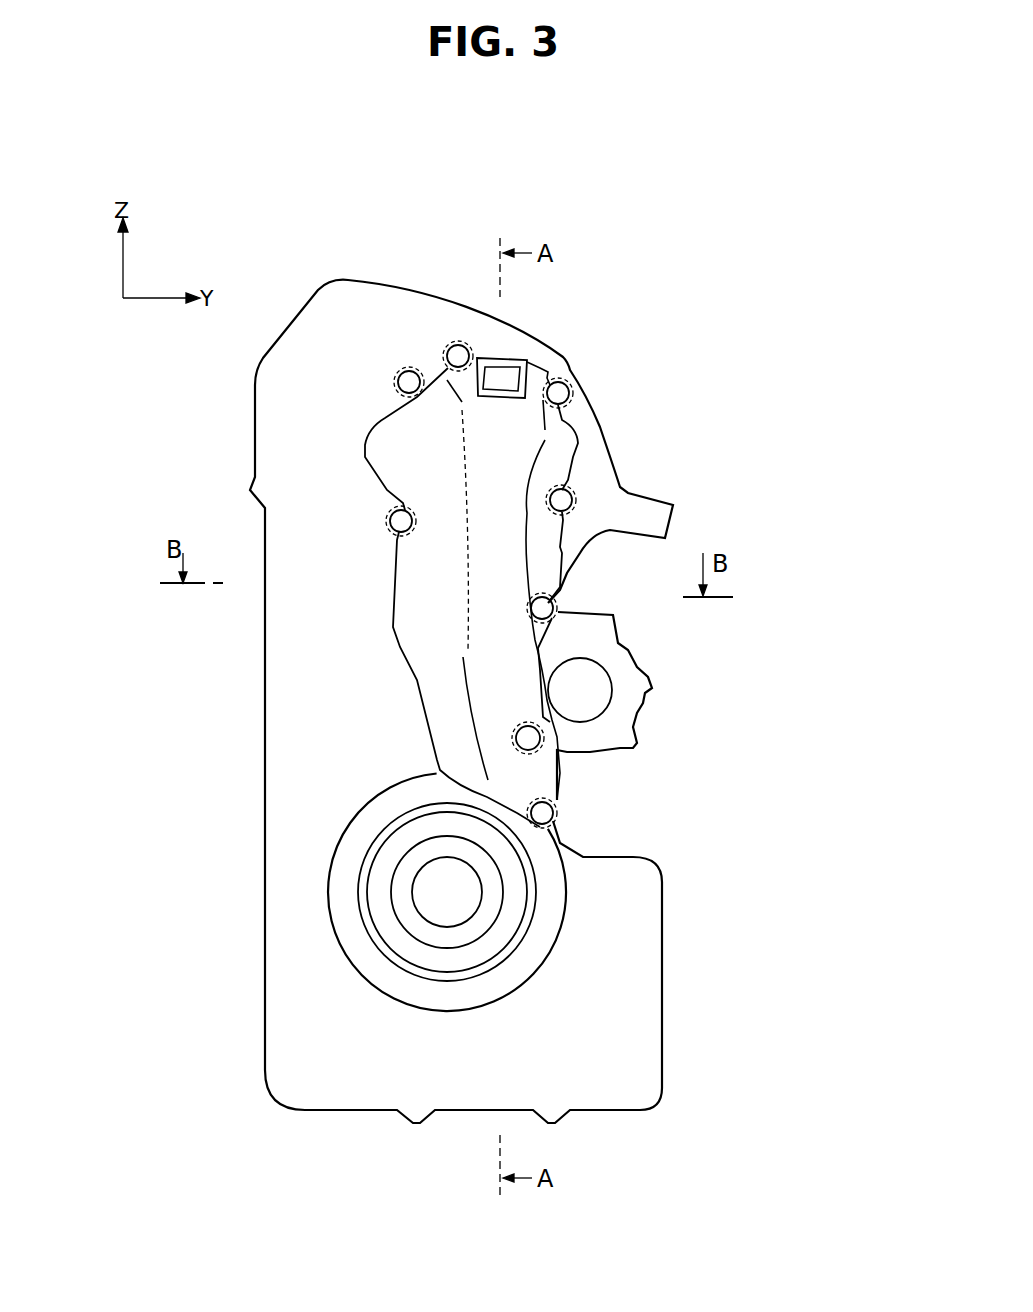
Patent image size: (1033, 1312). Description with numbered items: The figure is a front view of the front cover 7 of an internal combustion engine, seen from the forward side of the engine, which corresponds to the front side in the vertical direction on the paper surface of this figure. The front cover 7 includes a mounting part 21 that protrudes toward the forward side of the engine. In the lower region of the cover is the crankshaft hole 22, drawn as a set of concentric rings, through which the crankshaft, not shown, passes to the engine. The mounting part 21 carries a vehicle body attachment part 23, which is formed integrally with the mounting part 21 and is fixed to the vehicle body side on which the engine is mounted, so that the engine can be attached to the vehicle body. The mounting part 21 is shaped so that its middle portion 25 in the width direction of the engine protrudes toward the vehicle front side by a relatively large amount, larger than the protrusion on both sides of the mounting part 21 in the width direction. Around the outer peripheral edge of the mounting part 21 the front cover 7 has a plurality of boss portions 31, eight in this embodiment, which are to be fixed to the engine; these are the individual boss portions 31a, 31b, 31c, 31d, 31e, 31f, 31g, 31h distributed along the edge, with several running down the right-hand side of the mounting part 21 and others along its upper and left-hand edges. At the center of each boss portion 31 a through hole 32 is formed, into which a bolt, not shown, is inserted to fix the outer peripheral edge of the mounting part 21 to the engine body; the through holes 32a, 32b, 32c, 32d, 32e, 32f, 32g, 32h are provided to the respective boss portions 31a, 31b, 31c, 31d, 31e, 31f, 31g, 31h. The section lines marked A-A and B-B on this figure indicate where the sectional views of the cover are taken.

The front cover 7 is at (573, 302).
The mounting part 21 is at (550, 463).
The crankshaft hole 22 is at (420, 900).
The vehicle body attachment part 23 is at (553, 372).
The middle portion 25 is at (505, 543).
The boss portion 31 is at (439, 503).
The boss portion 31a is at (577, 395).
The boss portion 31b is at (572, 490).
The boss portion 31c is at (557, 613).
The boss portion 31d is at (560, 732).
The boss portion 31e is at (562, 810).
The boss portion 31f is at (450, 345).
The boss portion 31g is at (397, 377).
The boss portion 31h is at (387, 518).
The through hole 32 is at (465, 538).
The through hole 32a is at (570, 392).
The through hole 32b is at (572, 497).
The through hole 32c is at (560, 613).
The through hole 32d is at (548, 745).
The through hole 32e is at (555, 822).
The through hole 32f is at (458, 345).
The through hole 32g is at (398, 372).
The through hole 32h is at (392, 527).